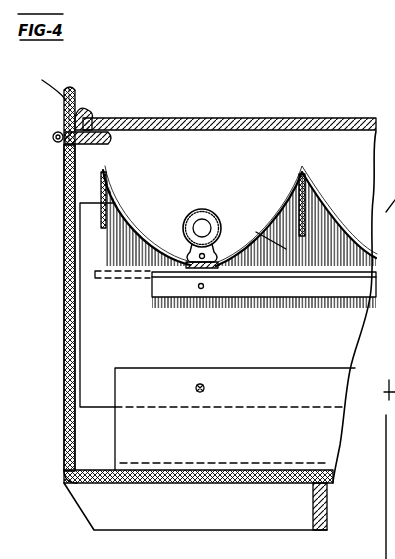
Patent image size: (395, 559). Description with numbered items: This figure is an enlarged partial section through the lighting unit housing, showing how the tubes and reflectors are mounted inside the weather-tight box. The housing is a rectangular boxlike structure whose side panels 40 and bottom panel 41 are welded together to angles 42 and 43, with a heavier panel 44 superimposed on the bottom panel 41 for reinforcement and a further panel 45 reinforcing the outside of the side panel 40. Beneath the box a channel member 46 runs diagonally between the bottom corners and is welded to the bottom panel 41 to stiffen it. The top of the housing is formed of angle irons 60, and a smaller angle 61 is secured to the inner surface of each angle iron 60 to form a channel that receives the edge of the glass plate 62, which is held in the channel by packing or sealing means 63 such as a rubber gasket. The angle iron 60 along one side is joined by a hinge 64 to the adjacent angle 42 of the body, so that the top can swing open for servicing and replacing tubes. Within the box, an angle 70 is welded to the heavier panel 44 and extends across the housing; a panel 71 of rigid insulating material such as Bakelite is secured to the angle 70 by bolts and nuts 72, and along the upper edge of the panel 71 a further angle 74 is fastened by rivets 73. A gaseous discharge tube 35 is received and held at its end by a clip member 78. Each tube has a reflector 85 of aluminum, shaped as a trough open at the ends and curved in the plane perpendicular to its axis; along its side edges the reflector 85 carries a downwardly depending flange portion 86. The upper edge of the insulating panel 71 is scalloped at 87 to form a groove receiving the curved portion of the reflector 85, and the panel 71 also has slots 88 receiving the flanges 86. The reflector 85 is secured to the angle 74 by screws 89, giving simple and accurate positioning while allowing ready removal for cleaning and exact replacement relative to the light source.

The gaseous discharge tube 35 is at (204, 209).
The side panel 40 is at (76, 297).
The bottom panel 41 is at (327, 487).
The angle 42 is at (112, 141).
The angle 43 is at (64, 472).
The heavier panel 44 is at (322, 478).
The panel 45 is at (64, 279).
The channel member 46 is at (245, 512).
The angle iron 60 is at (64, 110).
The smaller angle 61 is at (80, 100).
The glass plate 62 is at (222, 118).
The packing or sealing means 63 is at (93, 118).
The hinge 64 is at (66, 100).
The angle 70 is at (127, 435).
The panel of rigid insulating material 71 is at (90, 350).
The bolts and nuts 72 is at (200, 384).
The rivet 73 is at (202, 288).
The angle 74 is at (308, 290).
The clip member 78 is at (190, 253).
The reflector 85 is at (128, 210).
The flange portion 86 is at (305, 230).
The scalloped cut-out 87 is at (281, 247).
The slot 88 is at (104, 222).
The screw 89 is at (212, 270).